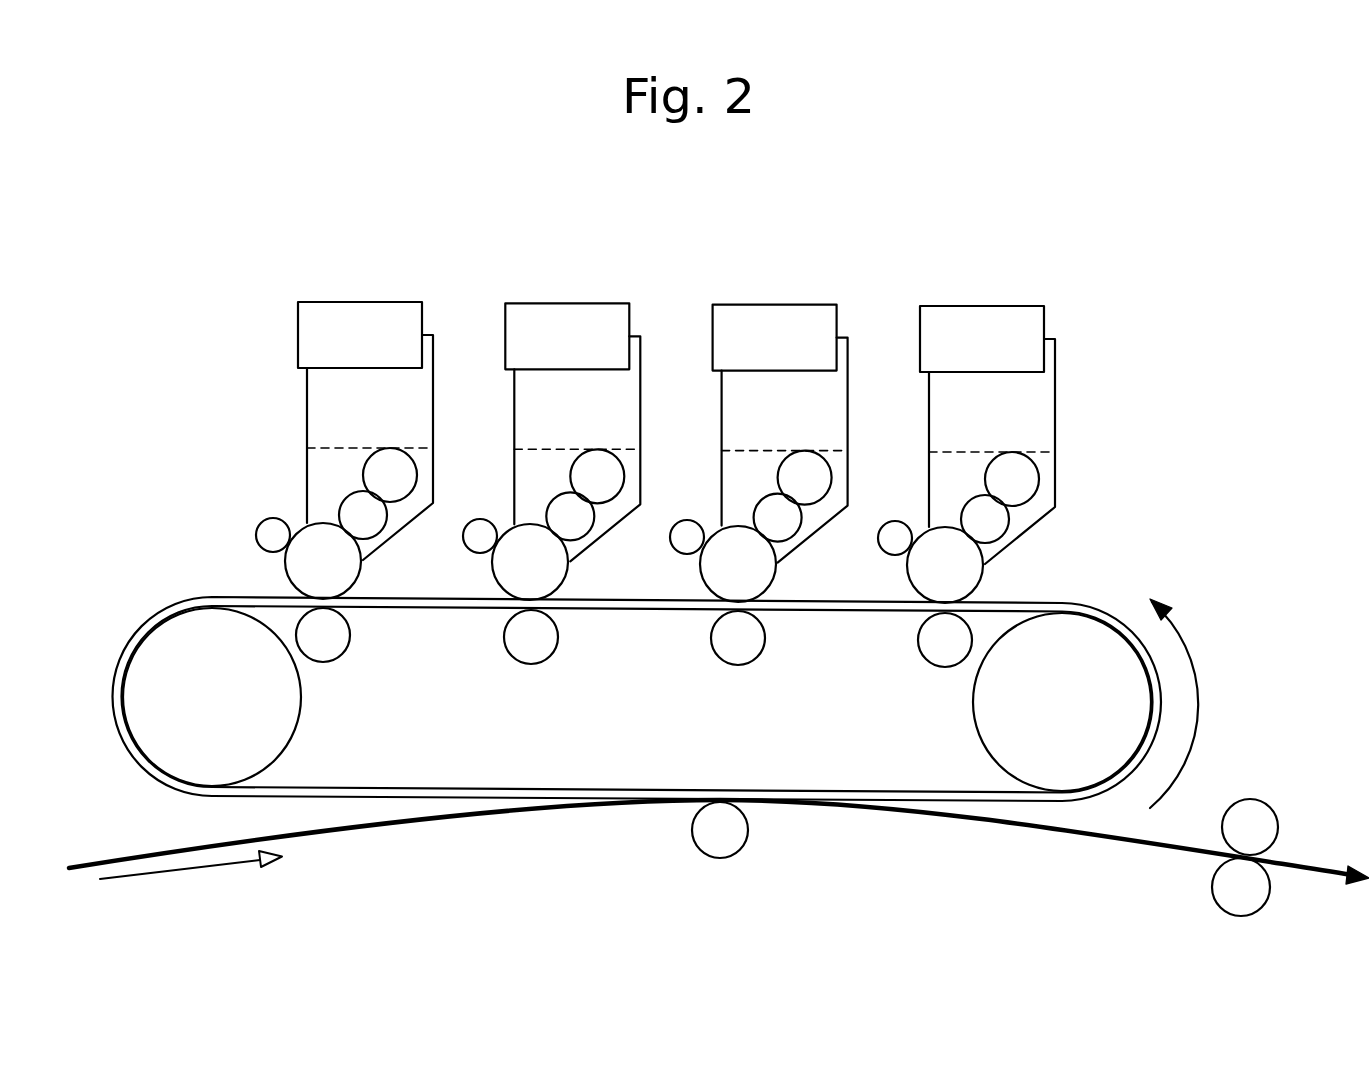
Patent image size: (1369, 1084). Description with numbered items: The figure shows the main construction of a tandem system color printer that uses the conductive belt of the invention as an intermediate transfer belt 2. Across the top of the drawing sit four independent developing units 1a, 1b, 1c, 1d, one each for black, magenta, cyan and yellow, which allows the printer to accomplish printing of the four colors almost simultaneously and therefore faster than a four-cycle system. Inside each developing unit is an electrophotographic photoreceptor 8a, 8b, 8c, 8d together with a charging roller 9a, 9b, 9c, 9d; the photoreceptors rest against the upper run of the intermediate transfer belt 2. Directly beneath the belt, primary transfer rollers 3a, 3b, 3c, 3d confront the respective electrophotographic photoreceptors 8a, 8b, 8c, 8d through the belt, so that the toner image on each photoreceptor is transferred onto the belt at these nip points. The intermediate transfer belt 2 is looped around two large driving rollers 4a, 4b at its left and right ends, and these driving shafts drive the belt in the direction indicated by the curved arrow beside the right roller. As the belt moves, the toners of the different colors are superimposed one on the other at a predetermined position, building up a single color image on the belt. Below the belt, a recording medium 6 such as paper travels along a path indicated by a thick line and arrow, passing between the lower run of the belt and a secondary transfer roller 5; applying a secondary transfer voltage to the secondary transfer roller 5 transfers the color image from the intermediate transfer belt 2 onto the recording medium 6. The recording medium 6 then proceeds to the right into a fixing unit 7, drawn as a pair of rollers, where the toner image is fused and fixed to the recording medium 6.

The developing unit 1a is at (366, 318).
The developing unit 1b is at (573, 319).
The developing unit 1c is at (780, 320).
The developing unit 1d is at (988, 321).
The intermediate transfer belt 2 is at (420, 790).
The primary transfer roller 3a is at (323, 643).
The primary transfer roller 3b is at (532, 645).
The primary transfer roller 3c is at (738, 646).
The primary transfer roller 3d is at (942, 647).
The driving roller 4a is at (158, 706).
The driving roller 4b is at (1098, 710).
The secondary transfer roller 5 is at (722, 835).
The recording medium 6 is at (383, 830).
The fixing unit 7 is at (1255, 822).
The electrophotographic photoreceptor 8a is at (300, 568).
The electrophotographic photoreceptor 8b is at (520, 566).
The electrophotographic photoreceptor 8c is at (728, 568).
The electrophotographic photoreceptor 8d is at (936, 568).
The charging roller 9a is at (268, 528).
The charging roller 9b is at (483, 533).
The charging roller 9c is at (691, 534).
The charging roller 9d is at (898, 535).